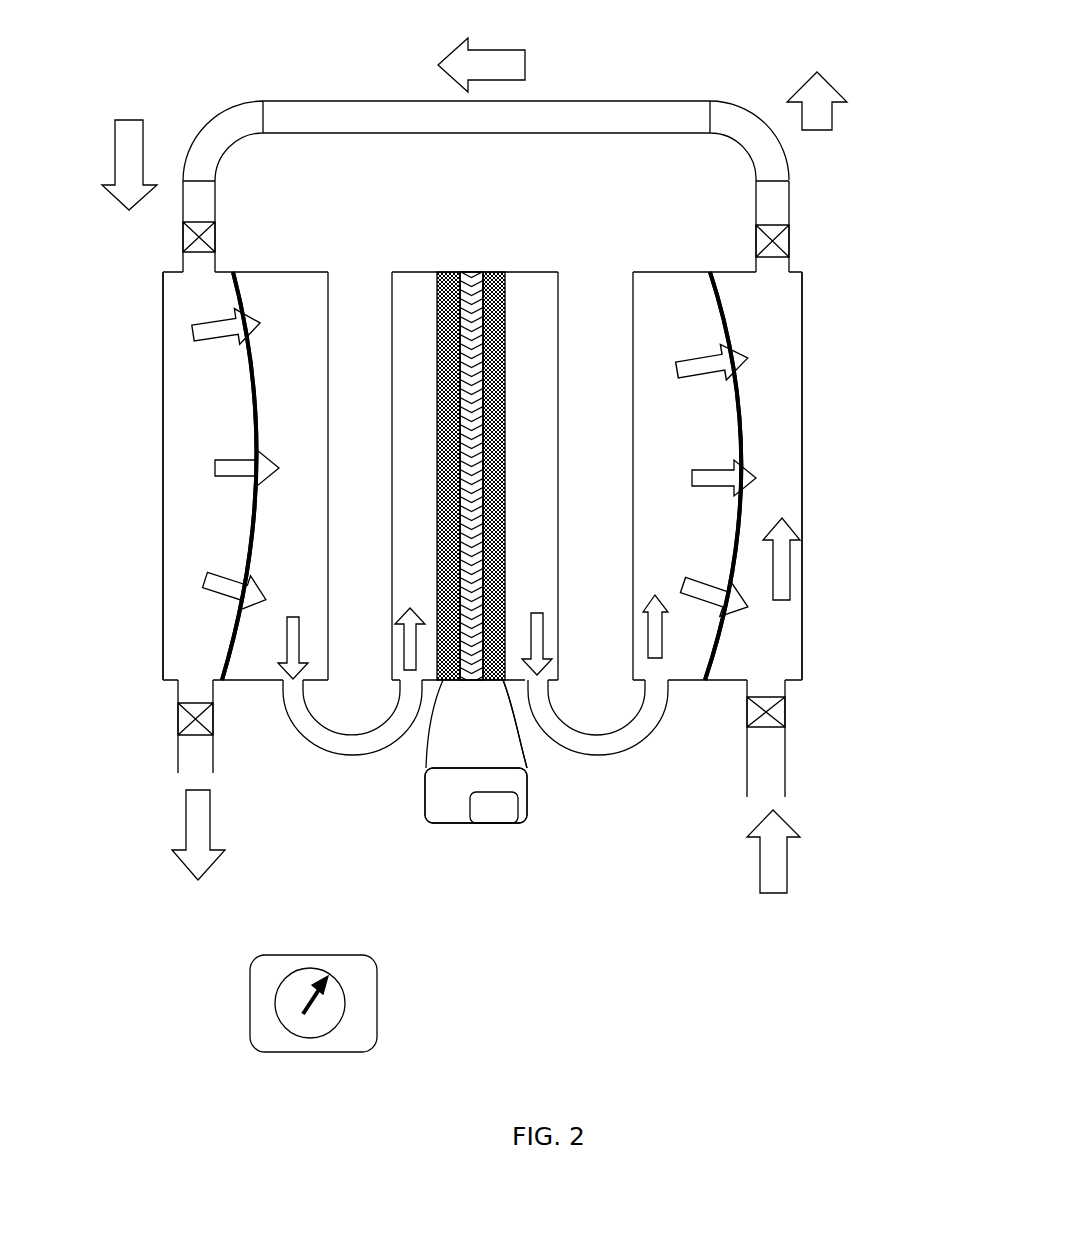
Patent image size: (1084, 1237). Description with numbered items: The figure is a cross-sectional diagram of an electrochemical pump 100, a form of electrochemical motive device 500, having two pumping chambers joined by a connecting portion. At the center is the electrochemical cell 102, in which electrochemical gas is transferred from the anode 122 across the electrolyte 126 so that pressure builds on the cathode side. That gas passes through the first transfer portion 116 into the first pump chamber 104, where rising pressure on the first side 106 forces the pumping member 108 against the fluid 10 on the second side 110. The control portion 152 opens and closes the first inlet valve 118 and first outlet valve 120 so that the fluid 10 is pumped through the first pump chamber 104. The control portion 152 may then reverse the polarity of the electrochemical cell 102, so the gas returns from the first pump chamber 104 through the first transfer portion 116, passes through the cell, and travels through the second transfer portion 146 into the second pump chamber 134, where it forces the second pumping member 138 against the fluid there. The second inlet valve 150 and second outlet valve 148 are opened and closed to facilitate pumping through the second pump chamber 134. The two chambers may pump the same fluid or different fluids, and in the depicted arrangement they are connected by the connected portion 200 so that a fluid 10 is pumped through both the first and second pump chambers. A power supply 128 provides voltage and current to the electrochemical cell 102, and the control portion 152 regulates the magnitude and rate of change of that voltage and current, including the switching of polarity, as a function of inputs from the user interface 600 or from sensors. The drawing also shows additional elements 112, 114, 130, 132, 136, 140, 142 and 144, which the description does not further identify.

The electrochemical pump 100 is at (232, 95).
The connected portion 200 is at (588, 125).
The electrochemical motive device 500 is at (723, 78).
The fluid 10 is at (227, 540).
The electrochemical cell 102 is at (512, 300).
The first pump chamber 104 is at (802, 628).
The first side 106 is at (710, 302).
The pumping member 108 is at (757, 478).
The second side 110 is at (777, 358).
The right inlet pipe 112 is at (760, 770).
The right outlet pipe 114 is at (767, 198).
The first transfer portion 116 is at (592, 748).
The first inlet valve 118 is at (745, 710).
The first outlet valve 120 is at (767, 231).
The anode 122 is at (490, 154).
The electrolyte 126 is at (497, 278).
The power supply 128 is at (450, 823).
The pump 130 is at (428, 745).
The right conduit 132 is at (518, 735).
The second pump chamber 134 is at (162, 628).
The left membrane 136 is at (283, 300).
The second pumping member 138 is at (273, 435).
The left chamber 140 is at (220, 373).
The left outlet pipe 142 is at (213, 765).
The left inlet pipe 144 is at (190, 190).
The second transfer portion 146 is at (343, 733).
The second outlet valve 148 is at (213, 716).
The second inlet valve 150 is at (216, 233).
The control portion 152 is at (490, 815).
The user interface 600 is at (345, 1010).